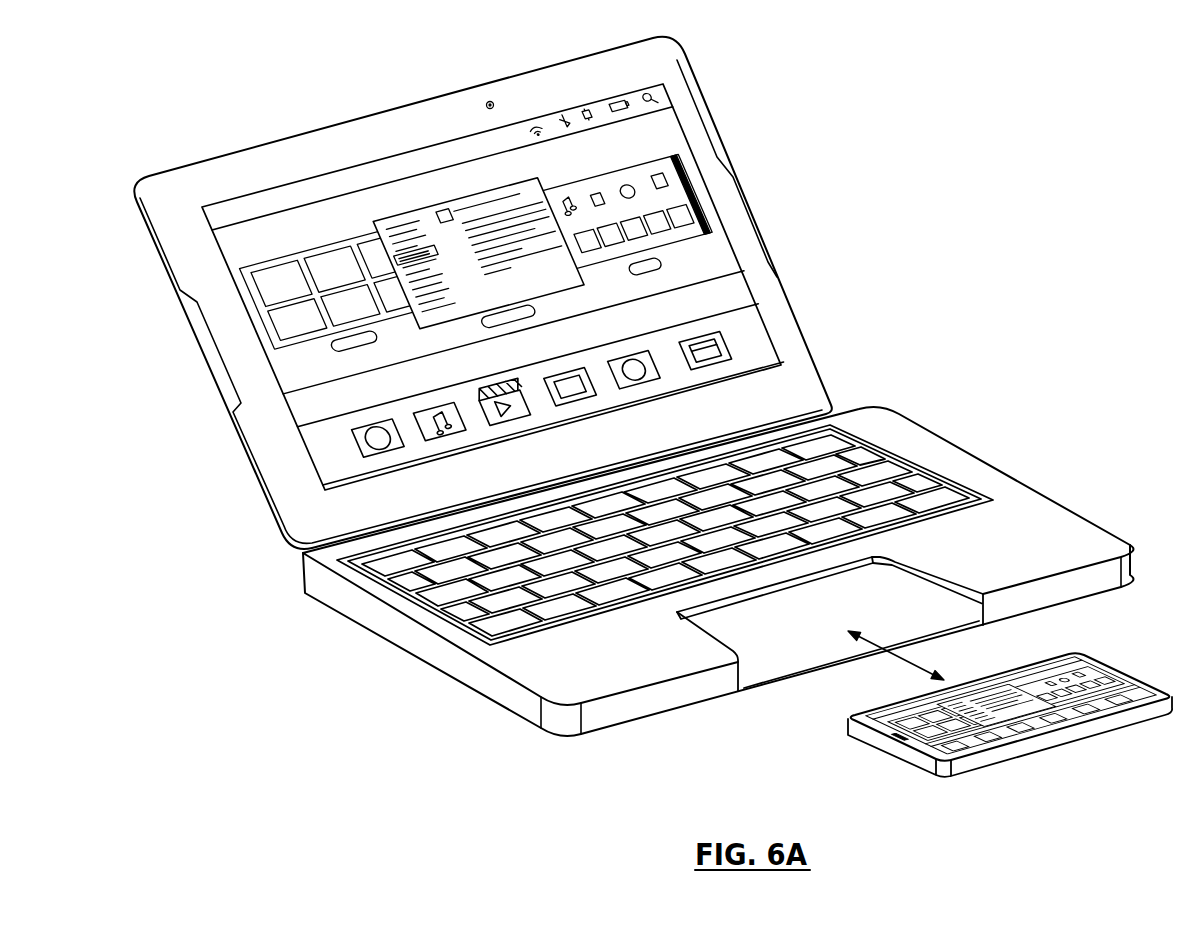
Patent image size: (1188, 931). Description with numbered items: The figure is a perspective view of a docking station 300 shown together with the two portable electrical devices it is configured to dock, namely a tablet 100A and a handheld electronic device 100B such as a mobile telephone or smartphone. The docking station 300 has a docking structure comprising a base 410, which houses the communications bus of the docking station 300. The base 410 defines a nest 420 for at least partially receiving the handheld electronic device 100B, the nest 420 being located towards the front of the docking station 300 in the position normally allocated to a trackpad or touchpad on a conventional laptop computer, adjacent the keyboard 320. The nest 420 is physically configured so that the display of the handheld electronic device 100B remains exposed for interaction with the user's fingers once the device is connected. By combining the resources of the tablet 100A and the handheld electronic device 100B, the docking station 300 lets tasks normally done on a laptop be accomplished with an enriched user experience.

The tablet 100A is at (718, 190).
The docking station 300 is at (887, 438).
The keyboard 320 is at (940, 497).
The base 410 is at (547, 682).
The nest 420 is at (760, 633).
The handheld electronic device 100B is at (920, 751).